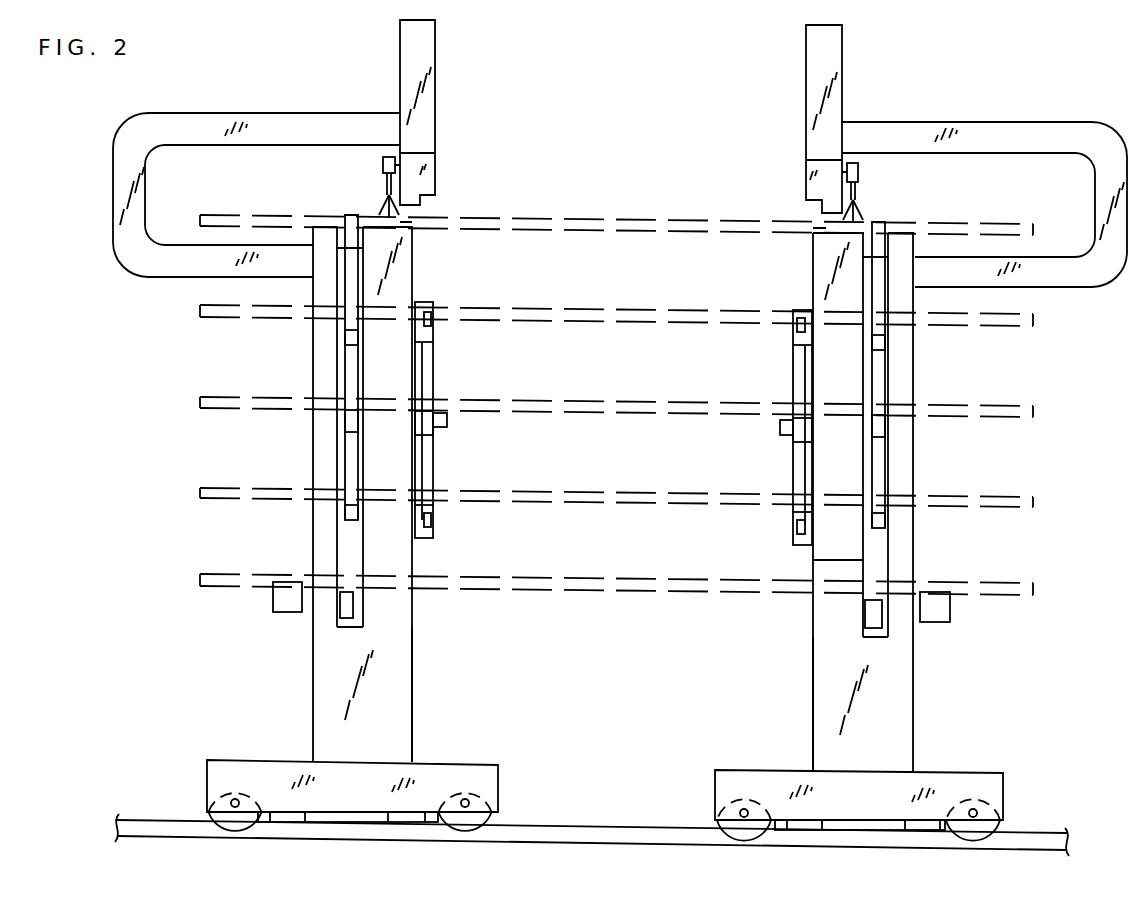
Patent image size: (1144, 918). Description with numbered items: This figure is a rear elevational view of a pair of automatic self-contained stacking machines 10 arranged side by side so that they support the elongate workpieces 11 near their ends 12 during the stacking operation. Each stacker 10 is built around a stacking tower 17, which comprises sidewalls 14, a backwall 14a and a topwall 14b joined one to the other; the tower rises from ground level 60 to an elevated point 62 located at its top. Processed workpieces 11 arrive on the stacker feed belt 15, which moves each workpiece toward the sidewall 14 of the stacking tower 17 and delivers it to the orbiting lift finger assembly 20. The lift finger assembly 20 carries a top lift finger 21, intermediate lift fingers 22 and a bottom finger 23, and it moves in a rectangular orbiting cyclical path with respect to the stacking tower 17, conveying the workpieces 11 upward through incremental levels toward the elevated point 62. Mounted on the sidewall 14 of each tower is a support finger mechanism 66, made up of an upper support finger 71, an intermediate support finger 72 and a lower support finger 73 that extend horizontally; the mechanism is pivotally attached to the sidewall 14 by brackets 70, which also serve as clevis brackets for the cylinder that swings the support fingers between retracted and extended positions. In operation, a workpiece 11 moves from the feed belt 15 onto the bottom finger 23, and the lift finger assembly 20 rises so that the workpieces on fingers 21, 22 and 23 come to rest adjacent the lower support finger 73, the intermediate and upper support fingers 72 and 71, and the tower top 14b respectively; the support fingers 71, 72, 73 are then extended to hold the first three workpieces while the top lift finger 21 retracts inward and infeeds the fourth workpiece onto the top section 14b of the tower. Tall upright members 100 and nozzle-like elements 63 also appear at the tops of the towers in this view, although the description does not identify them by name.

The automatic self-contained stacking machine 10 is at (258, 108).
The upper support column 100 is at (436, 51).
The spray nozzle 63 is at (383, 198).
The sidewall 14 is at (414, 270).
The backwall 14a is at (410, 243).
The topwall 14b is at (406, 222).
The stacking tower 17 is at (395, 460).
The elevated point 62 is at (328, 227).
The orbiting lift finger assembly 20 is at (350, 365).
The top lift finger 21 is at (352, 213).
The intermediate lift finger 22 is at (348, 333).
The bottom finger 23 is at (347, 512).
The support finger mechanism 66 is at (428, 516).
The upper support finger 71 is at (435, 332).
The lower support finger 73 is at (432, 512).
The actuating cylinder mounting bracket 70 is at (447, 417).
The intermediate support finger 72 is at (430, 436).
The workpiece ends 12 is at (198, 312).
The workpiece 11 is at (567, 230).
The stacker feed belt 15 is at (273, 603).
The ground level 60 is at (522, 848).